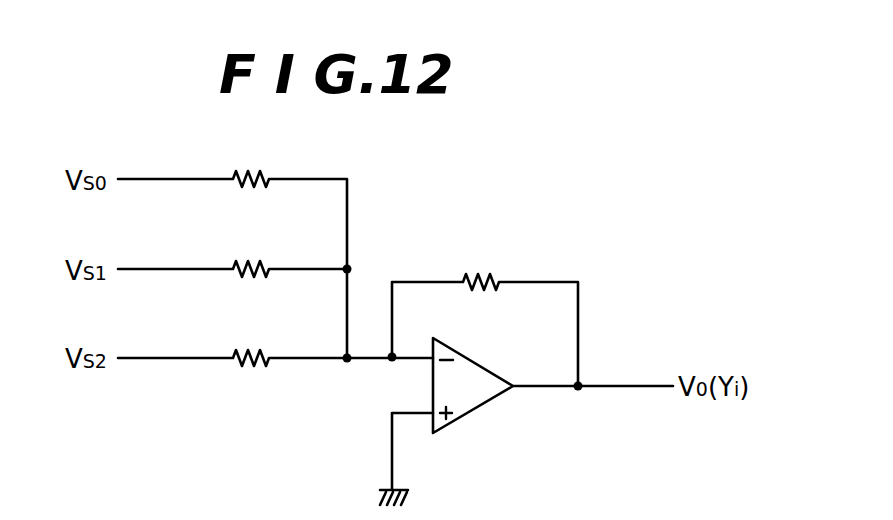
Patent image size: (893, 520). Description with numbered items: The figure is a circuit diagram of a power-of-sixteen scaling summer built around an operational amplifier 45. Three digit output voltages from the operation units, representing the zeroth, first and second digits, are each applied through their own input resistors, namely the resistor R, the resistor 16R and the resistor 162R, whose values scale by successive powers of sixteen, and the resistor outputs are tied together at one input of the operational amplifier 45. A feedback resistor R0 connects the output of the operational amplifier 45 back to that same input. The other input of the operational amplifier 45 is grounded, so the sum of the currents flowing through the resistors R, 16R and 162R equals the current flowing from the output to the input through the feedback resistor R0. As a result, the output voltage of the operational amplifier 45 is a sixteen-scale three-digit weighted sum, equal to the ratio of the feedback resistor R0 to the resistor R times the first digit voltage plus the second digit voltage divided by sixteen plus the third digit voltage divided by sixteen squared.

The operational amplifier 45 is at (473, 400).
The resistor R is at (232, 248).
The resistor 16R is at (232, 252).
The resistor 162R is at (275, 339).
The feedback resistor R0 is at (485, 315).